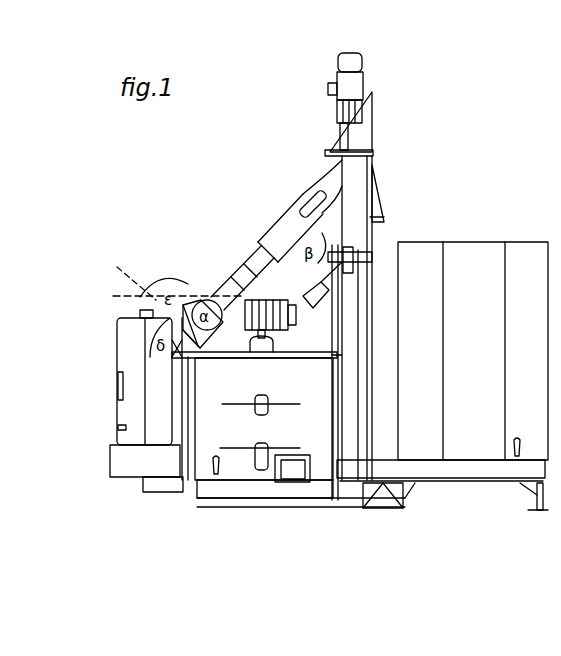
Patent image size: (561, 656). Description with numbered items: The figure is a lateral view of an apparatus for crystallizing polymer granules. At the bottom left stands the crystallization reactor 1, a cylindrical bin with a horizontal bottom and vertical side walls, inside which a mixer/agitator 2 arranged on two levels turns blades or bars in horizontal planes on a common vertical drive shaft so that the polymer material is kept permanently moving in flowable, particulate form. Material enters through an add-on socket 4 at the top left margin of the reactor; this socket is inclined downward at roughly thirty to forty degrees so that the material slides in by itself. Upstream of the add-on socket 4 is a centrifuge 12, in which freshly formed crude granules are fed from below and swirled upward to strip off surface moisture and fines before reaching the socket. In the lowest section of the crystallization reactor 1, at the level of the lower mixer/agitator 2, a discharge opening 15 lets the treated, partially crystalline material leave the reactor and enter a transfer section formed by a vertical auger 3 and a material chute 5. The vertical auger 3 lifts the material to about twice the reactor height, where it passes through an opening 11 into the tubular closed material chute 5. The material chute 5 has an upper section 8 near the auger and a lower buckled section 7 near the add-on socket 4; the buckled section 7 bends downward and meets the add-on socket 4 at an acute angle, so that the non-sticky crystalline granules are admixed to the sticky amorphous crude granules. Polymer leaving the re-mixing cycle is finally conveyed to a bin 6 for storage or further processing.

The crystallization reactor 1 is at (235, 472).
The mixer/agitator 2 is at (281, 403).
The vertical auger 3 is at (353, 322).
The add-on socket 4 is at (208, 346).
The material chute 5 is at (258, 228).
The bin 6 is at (487, 258).
The buckled section 7 is at (247, 320).
The upper section 8 is at (290, 190).
The opening 11 is at (322, 152).
The centrifuge 12 is at (106, 457).
The discharge opening 15 is at (340, 466).